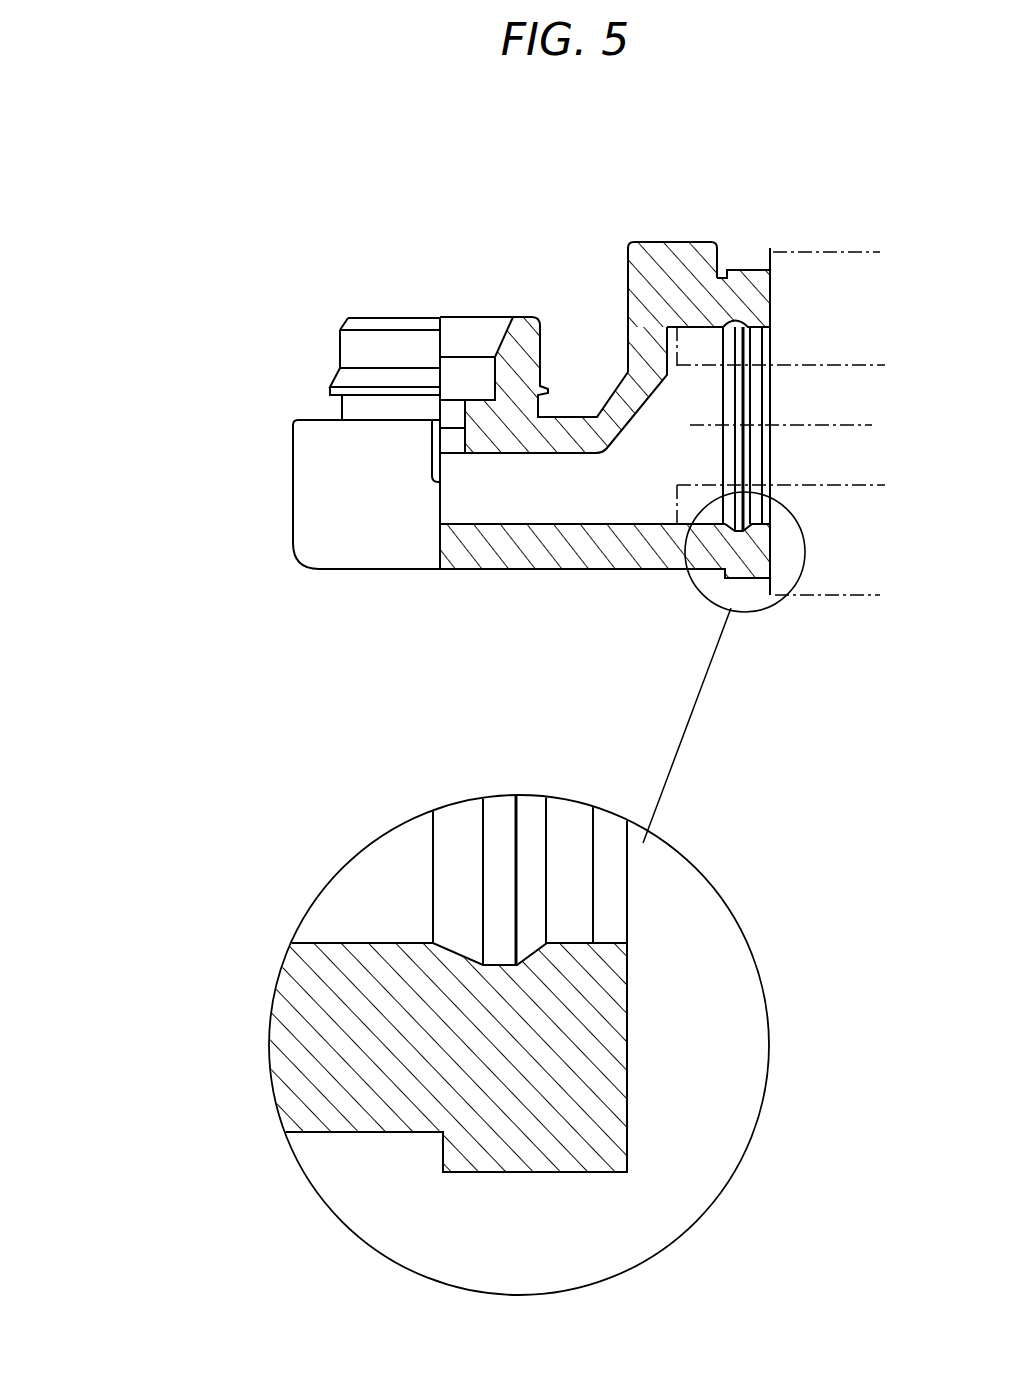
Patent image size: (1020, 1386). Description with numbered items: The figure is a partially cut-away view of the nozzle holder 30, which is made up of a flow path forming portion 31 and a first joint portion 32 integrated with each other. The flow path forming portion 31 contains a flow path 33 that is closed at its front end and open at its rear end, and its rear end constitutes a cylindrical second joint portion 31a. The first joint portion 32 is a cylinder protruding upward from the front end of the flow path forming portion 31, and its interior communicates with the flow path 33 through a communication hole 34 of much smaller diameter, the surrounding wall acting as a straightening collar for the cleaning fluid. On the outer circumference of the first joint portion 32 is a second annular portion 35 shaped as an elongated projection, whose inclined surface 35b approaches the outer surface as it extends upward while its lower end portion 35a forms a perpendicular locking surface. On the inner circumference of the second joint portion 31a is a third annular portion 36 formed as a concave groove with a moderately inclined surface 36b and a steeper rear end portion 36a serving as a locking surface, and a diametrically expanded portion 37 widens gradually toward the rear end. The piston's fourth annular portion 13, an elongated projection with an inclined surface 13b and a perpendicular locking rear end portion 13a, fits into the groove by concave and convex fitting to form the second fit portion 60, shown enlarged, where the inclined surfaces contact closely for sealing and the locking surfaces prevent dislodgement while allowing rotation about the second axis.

The nozzle holder 30 is at (284, 199).
The flow path forming portion 31 is at (538, 563).
The second joint portion 31a is at (735, 580).
The first joint portion 32 is at (520, 317).
The flow path 33 is at (500, 498).
The communication hole 34 is at (432, 430).
The second annular portion 35 is at (338, 380).
The lower end portion 35a is at (332, 400).
The inclined surface 35b is at (400, 373).
The third annular portion 36 is at (748, 437).
The rear end portion 36a is at (532, 808).
The inclined surface 36b is at (462, 827).
The diametrically expanded portion 37 is at (617, 896).
The fourth annular portion 13 is at (742, 312).
The rear end portion 13a is at (773, 303).
The inclined surface 13b is at (717, 310).
The second fit portion 60 is at (782, 600).